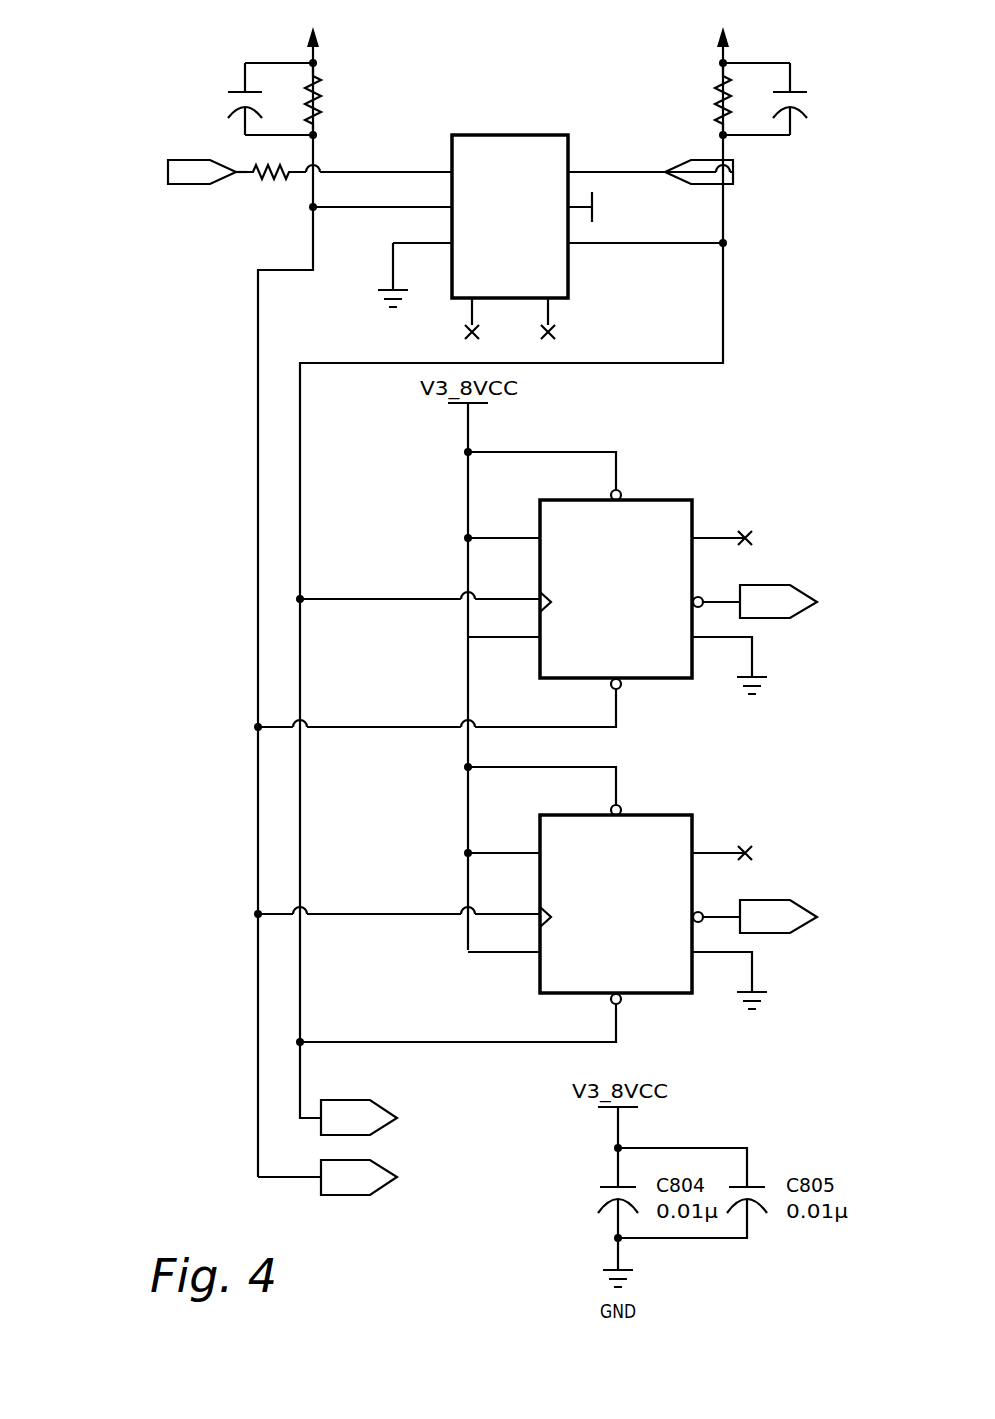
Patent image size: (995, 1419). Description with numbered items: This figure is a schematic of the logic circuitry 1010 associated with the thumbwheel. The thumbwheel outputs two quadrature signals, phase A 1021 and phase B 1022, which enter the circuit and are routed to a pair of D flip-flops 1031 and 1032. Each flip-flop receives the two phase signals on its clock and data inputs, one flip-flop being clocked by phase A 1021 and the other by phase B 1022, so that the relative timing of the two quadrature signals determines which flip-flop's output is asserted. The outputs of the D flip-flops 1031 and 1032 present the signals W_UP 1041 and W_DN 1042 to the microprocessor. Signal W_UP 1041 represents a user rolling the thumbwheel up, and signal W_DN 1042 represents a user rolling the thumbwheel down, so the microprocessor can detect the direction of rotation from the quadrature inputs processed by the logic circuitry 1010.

The logic circuitry 1010 is at (800, 26).
The D flip-flop 1031 is at (668, 500).
The D flip-flop 1032 is at (668, 815).
The W_UP signal 1041 is at (851, 622).
The W_DN signal 1042 is at (851, 937).
The phase A signal 1021 is at (485, 1116).
The phase B signal 1022 is at (487, 1198).